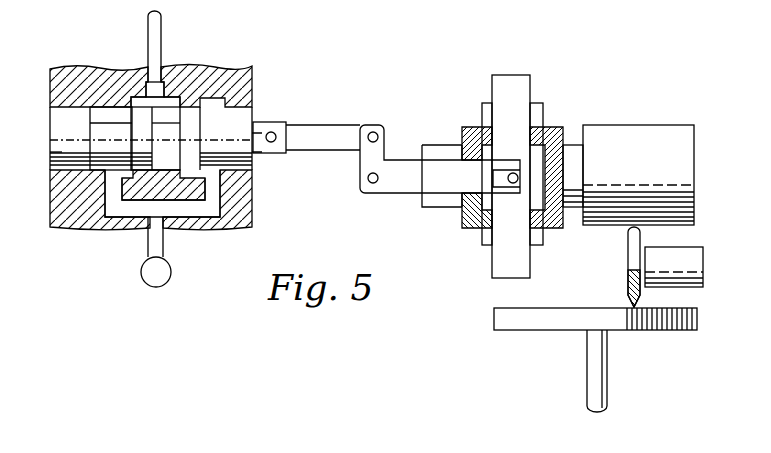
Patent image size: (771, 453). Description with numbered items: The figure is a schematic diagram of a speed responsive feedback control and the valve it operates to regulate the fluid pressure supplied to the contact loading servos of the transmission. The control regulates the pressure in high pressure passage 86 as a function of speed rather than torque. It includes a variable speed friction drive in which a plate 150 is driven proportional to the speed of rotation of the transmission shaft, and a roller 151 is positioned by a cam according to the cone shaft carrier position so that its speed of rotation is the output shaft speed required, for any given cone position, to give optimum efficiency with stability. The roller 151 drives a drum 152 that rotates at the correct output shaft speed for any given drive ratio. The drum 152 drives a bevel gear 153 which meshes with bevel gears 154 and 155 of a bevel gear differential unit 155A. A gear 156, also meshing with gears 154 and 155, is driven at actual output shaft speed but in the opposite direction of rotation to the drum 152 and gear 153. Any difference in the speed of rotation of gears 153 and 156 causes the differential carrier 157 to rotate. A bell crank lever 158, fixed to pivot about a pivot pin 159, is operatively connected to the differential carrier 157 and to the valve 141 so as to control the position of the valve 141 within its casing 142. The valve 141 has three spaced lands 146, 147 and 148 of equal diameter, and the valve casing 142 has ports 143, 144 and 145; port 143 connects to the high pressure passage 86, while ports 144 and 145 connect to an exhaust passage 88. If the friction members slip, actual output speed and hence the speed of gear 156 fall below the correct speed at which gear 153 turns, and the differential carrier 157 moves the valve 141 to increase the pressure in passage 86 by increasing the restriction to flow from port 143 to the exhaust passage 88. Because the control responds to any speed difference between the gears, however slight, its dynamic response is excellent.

The high pressure passage 86 is at (155, 47).
The exhaust passage 88 is at (157, 230).
The valve 141 is at (50, 153).
The valve casing 142 is at (88, 46).
The port 143 is at (149, 82).
The port 144 is at (235, 170).
The port 145 is at (112, 187).
The land 146 is at (245, 118).
The land 147 is at (135, 117).
The land 148 is at (62, 128).
The plate 150 is at (660, 326).
The roller 151 is at (703, 273).
The drum 152 is at (690, 184).
The bevel gear 153 is at (563, 142).
The bevel gear 154 is at (548, 132).
The bevel gear 155 is at (540, 242).
The bevel gear differential unit 155A is at (512, 75).
The gear 156 is at (468, 135).
The differential carrier 157 is at (497, 176).
The bell crank lever 158 is at (395, 178).
The pivot pin 159 is at (372, 183).